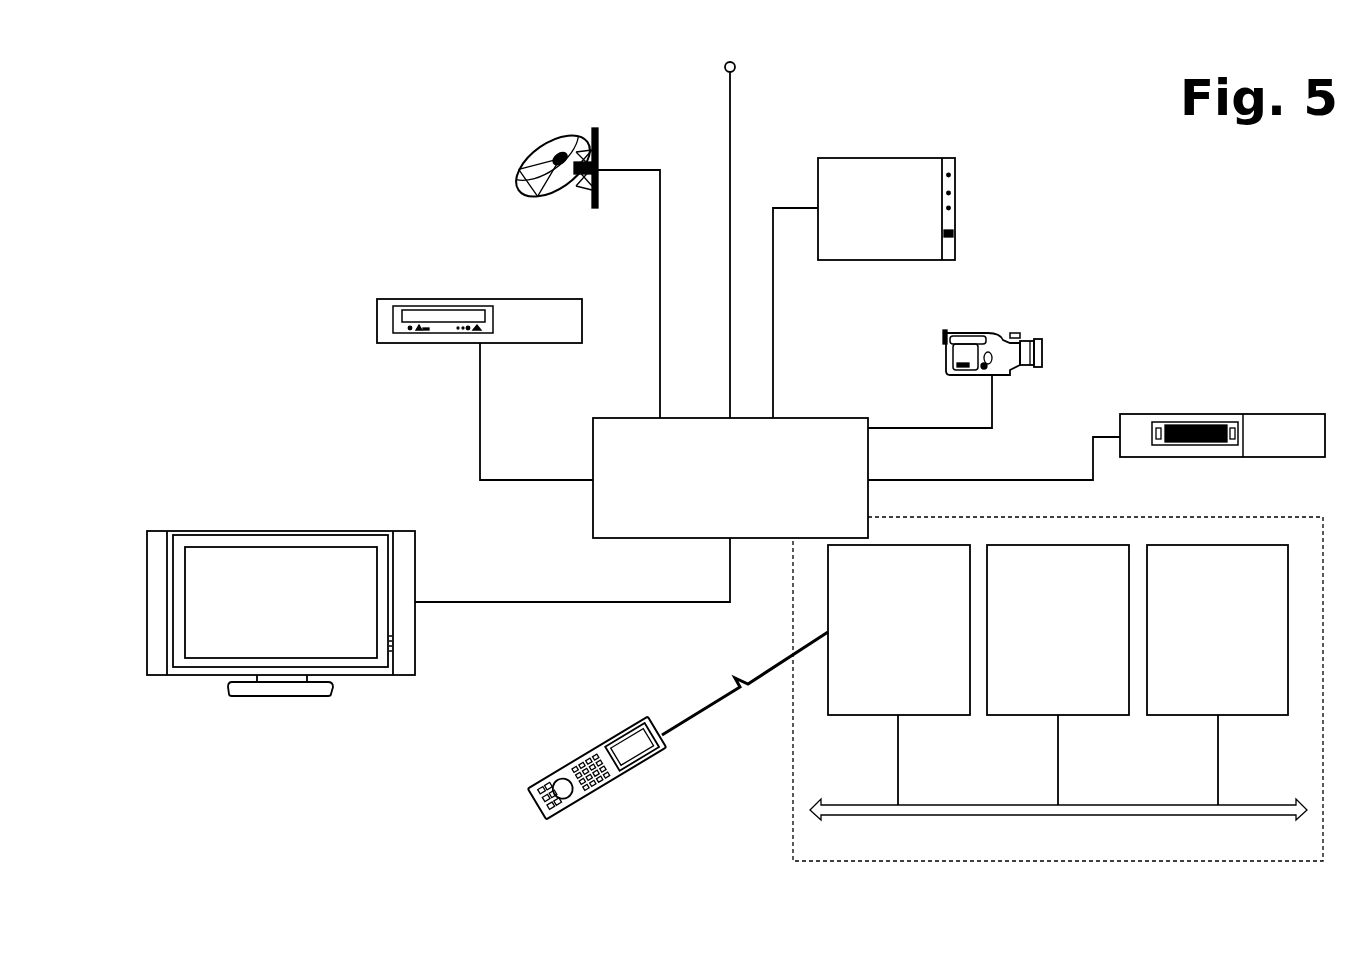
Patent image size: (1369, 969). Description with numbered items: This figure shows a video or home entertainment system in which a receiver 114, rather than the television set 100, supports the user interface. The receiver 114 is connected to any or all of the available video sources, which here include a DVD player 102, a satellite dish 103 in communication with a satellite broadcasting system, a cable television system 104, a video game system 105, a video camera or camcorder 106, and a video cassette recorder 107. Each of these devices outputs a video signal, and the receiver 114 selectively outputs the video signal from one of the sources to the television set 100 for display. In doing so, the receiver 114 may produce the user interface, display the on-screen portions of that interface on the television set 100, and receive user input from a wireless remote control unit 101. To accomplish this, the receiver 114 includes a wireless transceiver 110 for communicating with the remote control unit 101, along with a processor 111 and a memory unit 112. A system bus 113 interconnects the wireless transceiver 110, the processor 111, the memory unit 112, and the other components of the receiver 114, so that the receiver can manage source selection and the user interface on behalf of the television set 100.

The television set 100 is at (218, 637).
The wireless remote control unit 101 is at (597, 747).
The Digital Video Disc (DVD) player 102 is at (442, 340).
The satellite dish 103 is at (555, 155).
The cable television system 104 is at (730, 52).
The video game system 105 is at (898, 181).
The video camera or camcorder 106 is at (992, 350).
The video cassette recorder (VCR) 107 is at (1232, 420).
The wireless transceiver 110 is at (899, 675).
The processor 111 is at (1058, 675).
The memory unit 112 is at (1217, 675).
The system bus 113 is at (1058, 800).
The receiver 114 is at (730, 478).